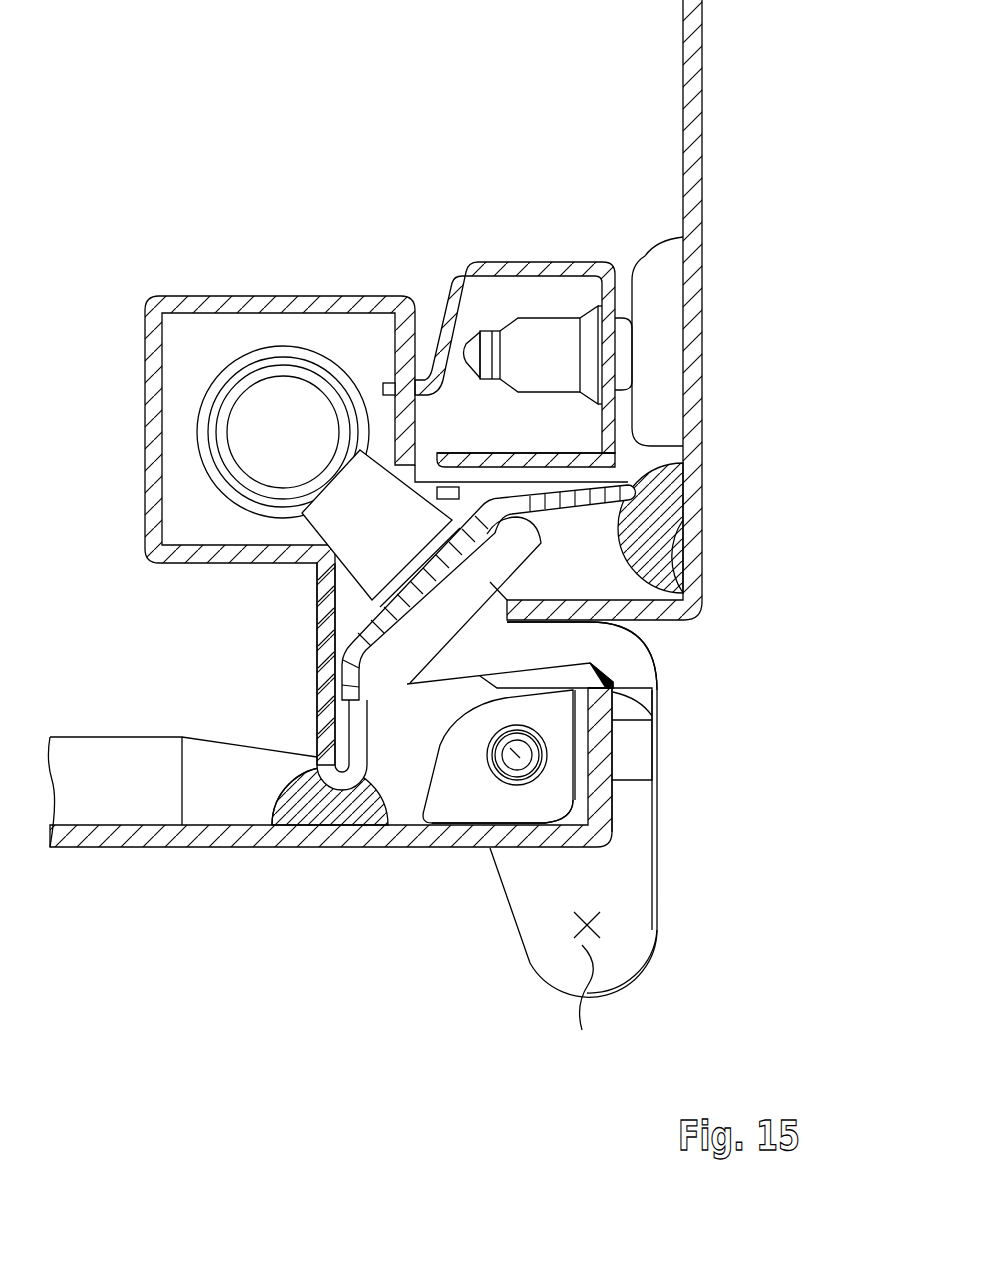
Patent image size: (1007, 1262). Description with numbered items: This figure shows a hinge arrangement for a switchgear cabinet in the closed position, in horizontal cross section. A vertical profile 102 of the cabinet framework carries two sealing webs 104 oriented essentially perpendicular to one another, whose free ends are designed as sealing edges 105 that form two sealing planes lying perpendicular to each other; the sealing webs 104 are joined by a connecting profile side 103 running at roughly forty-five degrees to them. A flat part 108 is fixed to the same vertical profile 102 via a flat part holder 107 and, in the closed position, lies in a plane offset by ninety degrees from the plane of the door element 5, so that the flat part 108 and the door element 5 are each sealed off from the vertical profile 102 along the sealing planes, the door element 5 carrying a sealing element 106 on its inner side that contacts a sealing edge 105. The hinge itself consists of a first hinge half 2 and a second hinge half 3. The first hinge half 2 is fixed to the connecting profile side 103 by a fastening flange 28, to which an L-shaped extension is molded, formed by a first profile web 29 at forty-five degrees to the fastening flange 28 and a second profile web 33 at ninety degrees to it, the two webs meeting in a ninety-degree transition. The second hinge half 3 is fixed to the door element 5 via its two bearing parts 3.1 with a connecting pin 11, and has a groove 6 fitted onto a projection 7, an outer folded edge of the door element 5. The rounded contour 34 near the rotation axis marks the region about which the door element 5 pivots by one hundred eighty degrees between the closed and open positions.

The first hinge half 2 is at (630, 890).
The second hinge half 3 is at (430, 760).
The bearing parts 3.1 is at (466, 800).
The door element 5 is at (200, 838).
The groove 6 is at (602, 835).
The projection 7 is at (600, 744).
The connecting pin 11 is at (500, 743).
The fastening flange 28 is at (522, 538).
The first profile web 29 is at (602, 641).
The second profile web 33 is at (646, 693).
The rounded end 34 is at (633, 940).
The vertical profile 102 is at (243, 268).
The connecting profile side 103 is at (487, 507).
The sealing webs 104 is at (660, 446).
The sealing edges 105 is at (648, 490).
The sealing element 106 is at (662, 542).
The flat part holder 107 is at (527, 262).
The flat part 108 is at (686, 95).